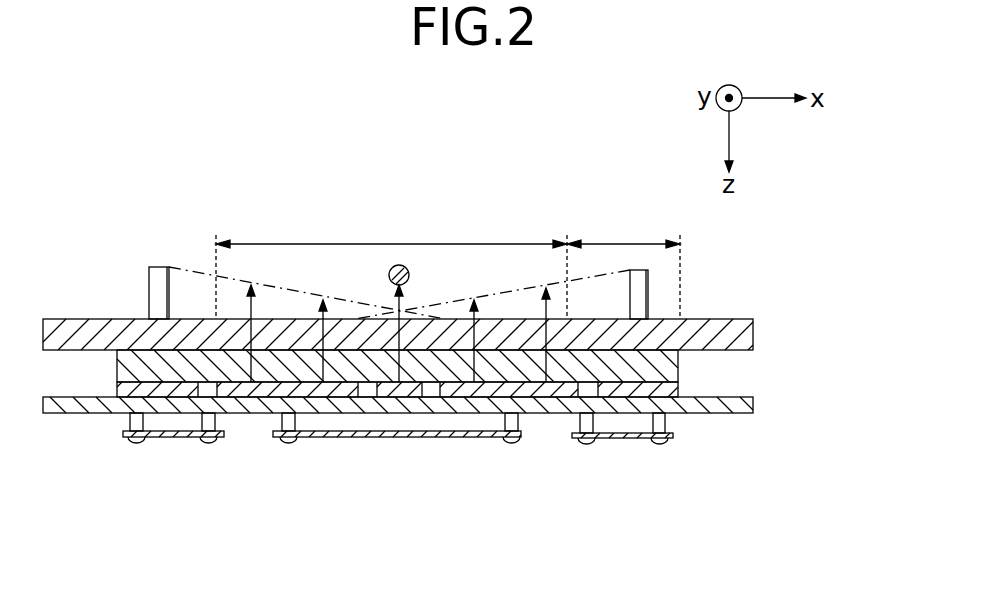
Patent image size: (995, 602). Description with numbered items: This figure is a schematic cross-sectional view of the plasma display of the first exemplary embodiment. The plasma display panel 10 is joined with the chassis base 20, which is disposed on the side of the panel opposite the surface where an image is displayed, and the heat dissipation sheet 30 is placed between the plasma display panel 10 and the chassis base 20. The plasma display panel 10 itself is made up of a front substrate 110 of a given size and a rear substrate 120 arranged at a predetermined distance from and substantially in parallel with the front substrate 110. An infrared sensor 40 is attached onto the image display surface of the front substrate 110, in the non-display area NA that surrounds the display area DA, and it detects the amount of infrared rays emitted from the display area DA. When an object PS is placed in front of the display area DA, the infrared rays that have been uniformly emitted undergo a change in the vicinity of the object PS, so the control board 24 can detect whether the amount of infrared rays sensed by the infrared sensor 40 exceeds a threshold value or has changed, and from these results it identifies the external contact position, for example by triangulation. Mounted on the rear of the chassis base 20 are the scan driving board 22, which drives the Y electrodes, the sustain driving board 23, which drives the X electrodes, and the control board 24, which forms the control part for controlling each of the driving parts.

The plasma display panel 10 is at (478, 359).
The front substrate 110 is at (742, 340).
The rear substrate 120 is at (665, 367).
The chassis base 20 is at (717, 408).
The scan driving board 22 is at (172, 434).
The sustain driving board 23 is at (628, 440).
The control board 24 is at (415, 438).
The heat dissipation sheet 30 is at (242, 393).
The infrared sensor 40 is at (155, 283).
The object PS is at (400, 265).
The display area DA is at (391, 264).
The non-display area NA is at (623, 264).